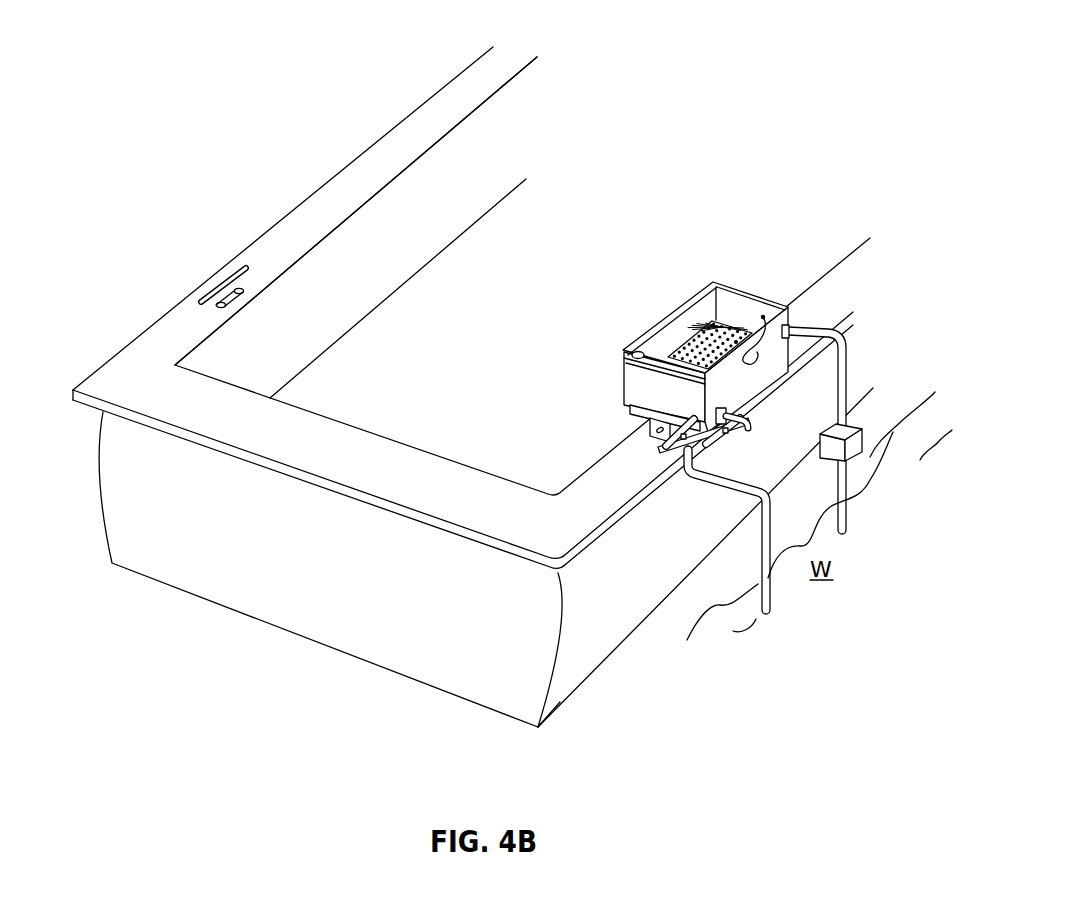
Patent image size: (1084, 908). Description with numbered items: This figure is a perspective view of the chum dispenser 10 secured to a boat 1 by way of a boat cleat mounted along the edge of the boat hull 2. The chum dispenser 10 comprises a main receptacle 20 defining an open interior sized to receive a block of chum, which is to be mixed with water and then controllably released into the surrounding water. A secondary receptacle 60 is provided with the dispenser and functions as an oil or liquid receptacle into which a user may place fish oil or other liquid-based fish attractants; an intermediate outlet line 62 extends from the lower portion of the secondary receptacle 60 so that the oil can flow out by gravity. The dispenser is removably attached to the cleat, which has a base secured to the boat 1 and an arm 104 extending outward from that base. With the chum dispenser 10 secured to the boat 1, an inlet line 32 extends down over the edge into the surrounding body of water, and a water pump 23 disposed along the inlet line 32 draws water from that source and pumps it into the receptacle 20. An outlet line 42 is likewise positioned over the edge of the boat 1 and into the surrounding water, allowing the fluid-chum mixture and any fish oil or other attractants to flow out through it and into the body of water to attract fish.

The boat 1 is at (316, 181).
The boat hull 2 is at (632, 607).
The chum dispenser 10 is at (713, 404).
The receptacle 20 is at (683, 305).
The water pump 23 is at (854, 448).
The inlet line 32 is at (818, 331).
The outlet line 42 is at (708, 455).
The secondary receptacle 60 is at (630, 378).
The intermediate outlet line 62 is at (657, 447).
The arm 104 is at (647, 424).